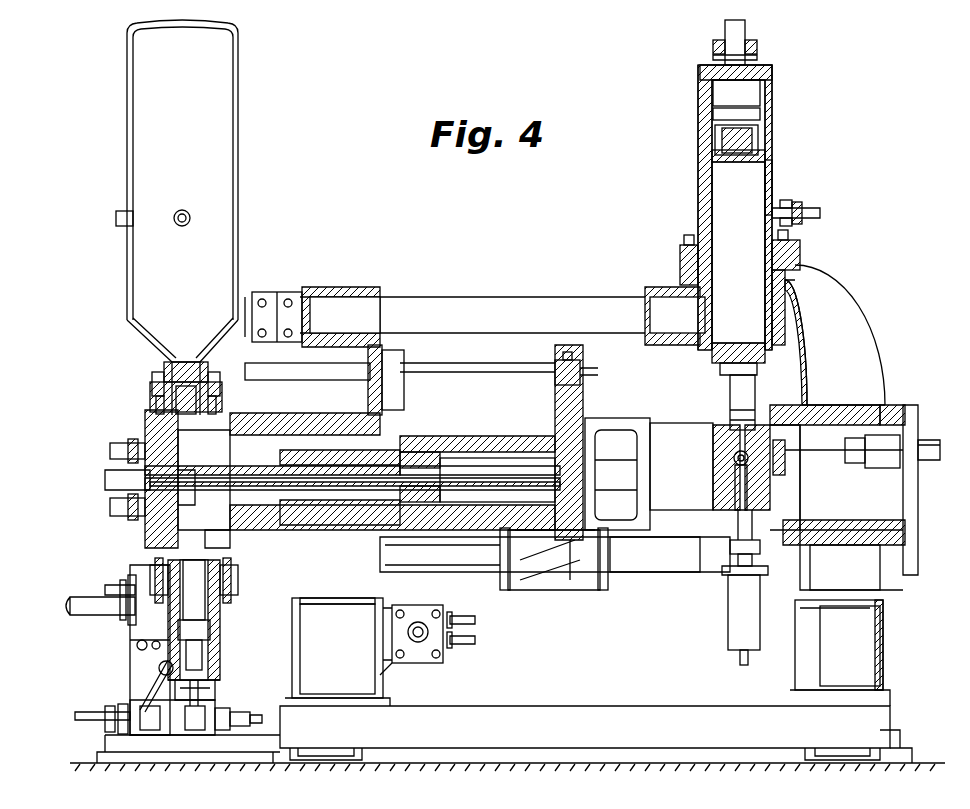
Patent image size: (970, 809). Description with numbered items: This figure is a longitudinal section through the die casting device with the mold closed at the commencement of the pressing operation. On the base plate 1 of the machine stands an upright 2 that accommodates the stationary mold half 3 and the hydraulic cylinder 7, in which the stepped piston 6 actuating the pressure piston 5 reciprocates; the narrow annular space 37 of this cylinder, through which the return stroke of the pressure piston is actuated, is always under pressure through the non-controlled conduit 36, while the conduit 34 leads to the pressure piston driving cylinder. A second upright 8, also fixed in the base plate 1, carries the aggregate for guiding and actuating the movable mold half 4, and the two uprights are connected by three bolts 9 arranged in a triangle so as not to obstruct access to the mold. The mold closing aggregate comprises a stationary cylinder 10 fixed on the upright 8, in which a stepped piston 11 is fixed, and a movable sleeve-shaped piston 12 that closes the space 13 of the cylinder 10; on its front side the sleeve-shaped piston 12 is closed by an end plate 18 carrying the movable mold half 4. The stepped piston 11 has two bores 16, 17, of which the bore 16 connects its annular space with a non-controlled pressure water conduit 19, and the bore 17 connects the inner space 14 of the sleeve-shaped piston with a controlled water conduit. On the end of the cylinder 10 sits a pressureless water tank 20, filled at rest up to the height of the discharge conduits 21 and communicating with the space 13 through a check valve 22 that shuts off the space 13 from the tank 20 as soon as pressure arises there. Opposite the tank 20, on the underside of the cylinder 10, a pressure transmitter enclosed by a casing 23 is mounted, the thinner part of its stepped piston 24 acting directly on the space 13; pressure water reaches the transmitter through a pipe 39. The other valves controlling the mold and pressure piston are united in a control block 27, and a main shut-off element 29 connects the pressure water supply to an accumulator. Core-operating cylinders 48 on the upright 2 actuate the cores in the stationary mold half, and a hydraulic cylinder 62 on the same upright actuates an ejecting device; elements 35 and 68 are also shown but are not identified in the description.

The base plate 1 is at (512, 713).
The upright 2 is at (800, 375).
The stationary mold half 3 is at (758, 425).
The movable mold half 4 is at (715, 425).
The pressure piston 5 is at (730, 400).
The stepped piston 6 is at (740, 253).
The hydraulic cylinder 7 is at (773, 135).
The upright 8 is at (297, 641).
The bolts 9 is at (542, 300).
The stationary cylinder 10 is at (282, 415).
The stepped piston 11 is at (222, 467).
The sleeve-shaped piston 12 is at (494, 440).
The cylinder space 13 is at (366, 489).
The inner space 14 is at (477, 477).
The bore 16 is at (195, 467).
The bore 17 is at (240, 490).
The end plate 18 is at (582, 418).
The non-controlled pressure water conduit 19 is at (110, 482).
The pressureless water tank 20 is at (228, 138).
The discharge conduits 21 is at (128, 226).
The check valve 22 is at (158, 424).
The casing 23 is at (218, 630).
The stepped piston 24 is at (194, 615).
The control block 27 is at (132, 628).
The main shut-off element 29 is at (416, 658).
The conduit 34 is at (740, 36).
The chamber 35 is at (736, 93).
The non-controlled conduit 36 is at (812, 207).
The narrow annular space 37 is at (773, 187).
The pipe 39 is at (108, 597).
The core-operating cylinders 48 is at (760, 630).
The hydraulic cylinder 62 is at (886, 465).
The pivot pin 68 is at (713, 453).